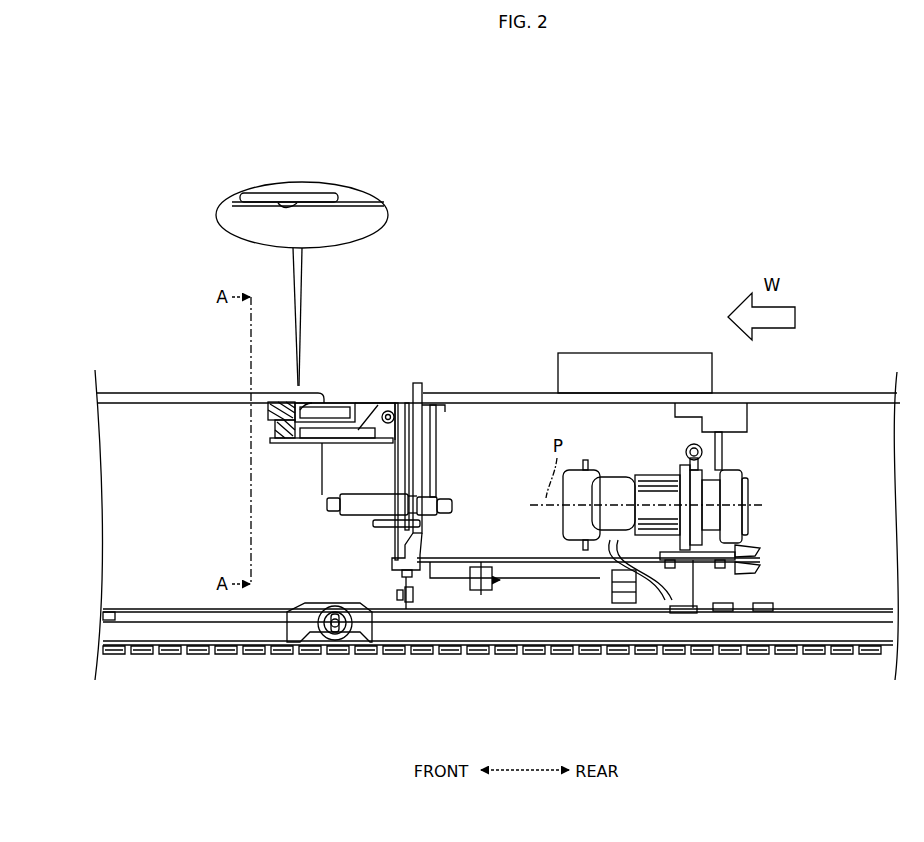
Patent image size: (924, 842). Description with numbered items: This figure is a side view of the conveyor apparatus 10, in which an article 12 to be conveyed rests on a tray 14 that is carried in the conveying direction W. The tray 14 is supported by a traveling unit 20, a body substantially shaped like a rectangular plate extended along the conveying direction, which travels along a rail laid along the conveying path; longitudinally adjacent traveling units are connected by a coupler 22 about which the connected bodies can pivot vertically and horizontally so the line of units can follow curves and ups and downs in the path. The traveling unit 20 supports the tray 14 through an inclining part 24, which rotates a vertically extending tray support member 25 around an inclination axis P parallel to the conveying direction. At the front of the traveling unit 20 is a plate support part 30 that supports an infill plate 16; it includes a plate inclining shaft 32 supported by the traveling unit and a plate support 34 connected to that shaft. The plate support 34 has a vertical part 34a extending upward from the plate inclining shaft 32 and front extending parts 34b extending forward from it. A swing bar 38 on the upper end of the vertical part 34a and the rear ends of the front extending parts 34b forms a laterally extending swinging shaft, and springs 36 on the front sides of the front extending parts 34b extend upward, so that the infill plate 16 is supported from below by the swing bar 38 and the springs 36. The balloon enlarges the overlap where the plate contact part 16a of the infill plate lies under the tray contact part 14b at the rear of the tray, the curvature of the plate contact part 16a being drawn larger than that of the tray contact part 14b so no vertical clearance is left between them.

The conveyor apparatus 10 is at (108, 208).
The article 12 is at (620, 365).
The tray 14 is at (190, 392).
The tray contact part 14b is at (283, 204).
The infill plate 16 is at (363, 402).
The plate contact part 16a is at (306, 205).
The traveling unit 20 is at (838, 660).
The coupler 22 is at (318, 647).
The inclining part 24 is at (750, 489).
The tray support member 25 is at (723, 446).
The plate support part 30 is at (337, 437).
The plate inclining shaft 32 is at (330, 504).
The plate support 34 is at (385, 449).
The vertical part 34a is at (375, 448).
The front extending parts 34b is at (313, 441).
The springs 36 is at (268, 412).
The swing bar 38 is at (392, 400).